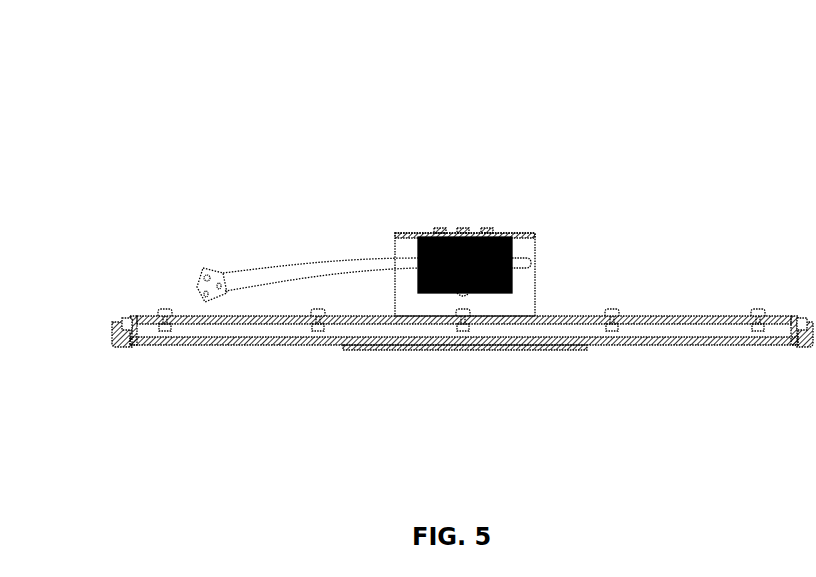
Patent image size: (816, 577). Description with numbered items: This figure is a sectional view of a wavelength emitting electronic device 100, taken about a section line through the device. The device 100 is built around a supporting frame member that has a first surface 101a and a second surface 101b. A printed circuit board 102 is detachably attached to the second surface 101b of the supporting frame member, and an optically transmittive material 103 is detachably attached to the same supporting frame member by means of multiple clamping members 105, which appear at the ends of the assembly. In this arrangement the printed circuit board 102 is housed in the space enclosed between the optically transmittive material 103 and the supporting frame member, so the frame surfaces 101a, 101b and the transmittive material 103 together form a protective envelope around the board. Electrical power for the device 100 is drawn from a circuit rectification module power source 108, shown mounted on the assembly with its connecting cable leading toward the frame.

The wavelength emitting electronic device 100 is at (396, 66).
The first surface 101a is at (136, 321).
The second surface 101b is at (129, 345).
The printed circuit board 102 is at (318, 332).
The optically transmittive material 103 is at (755, 346).
The clamping member 105 is at (127, 322).
The circuit rectification module power source 108 is at (512, 283).